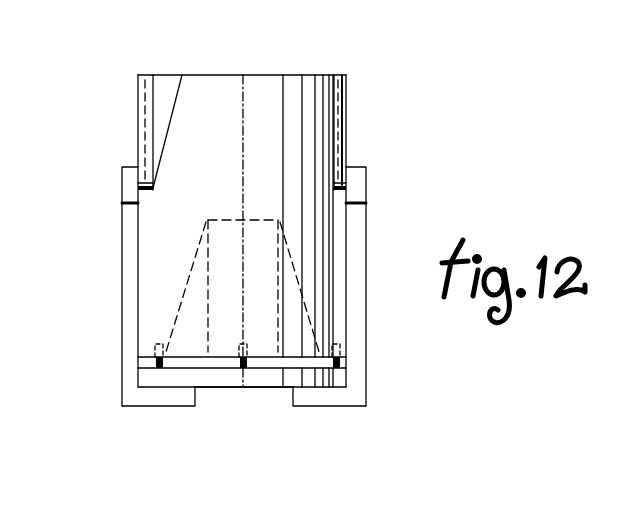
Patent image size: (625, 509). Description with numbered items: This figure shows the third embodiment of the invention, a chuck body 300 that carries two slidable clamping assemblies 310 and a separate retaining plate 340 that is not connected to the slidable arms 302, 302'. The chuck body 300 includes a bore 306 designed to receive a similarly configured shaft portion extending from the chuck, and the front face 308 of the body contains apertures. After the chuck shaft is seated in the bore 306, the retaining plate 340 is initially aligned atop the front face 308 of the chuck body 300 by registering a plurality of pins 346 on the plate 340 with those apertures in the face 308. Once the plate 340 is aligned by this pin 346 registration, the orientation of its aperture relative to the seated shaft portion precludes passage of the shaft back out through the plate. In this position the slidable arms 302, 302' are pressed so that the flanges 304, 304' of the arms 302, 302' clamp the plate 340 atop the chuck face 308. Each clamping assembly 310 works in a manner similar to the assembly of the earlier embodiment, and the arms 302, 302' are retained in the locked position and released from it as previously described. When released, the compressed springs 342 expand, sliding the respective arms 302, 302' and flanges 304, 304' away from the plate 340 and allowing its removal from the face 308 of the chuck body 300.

The chuck body 300 is at (137, 50).
The slidable arm 302 is at (295, 355).
The slidable arm 302' is at (201, 387).
The flange 304 is at (346, 422).
The flange 304' is at (136, 420).
The bore 306 is at (240, 177).
The face 308 is at (287, 357).
The clamping assembly 310 is at (108, 184).
The retaining plate 340 is at (213, 387).
The compressed spring 342 is at (140, 108).
The pin 346 is at (148, 340).